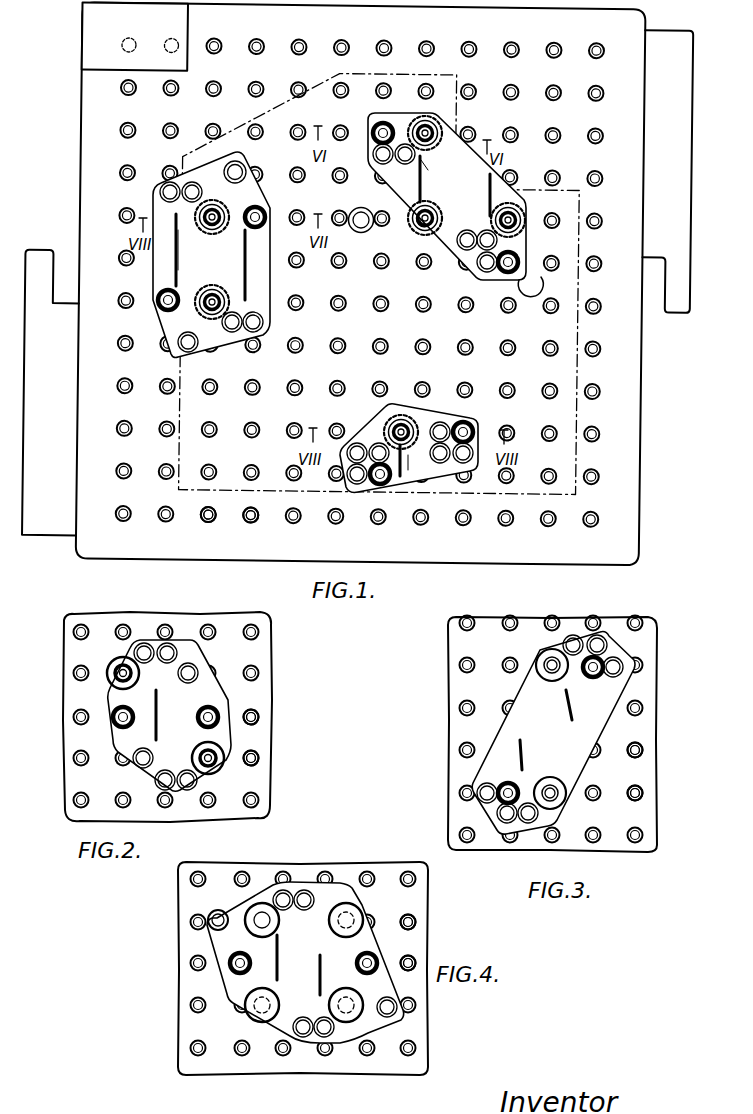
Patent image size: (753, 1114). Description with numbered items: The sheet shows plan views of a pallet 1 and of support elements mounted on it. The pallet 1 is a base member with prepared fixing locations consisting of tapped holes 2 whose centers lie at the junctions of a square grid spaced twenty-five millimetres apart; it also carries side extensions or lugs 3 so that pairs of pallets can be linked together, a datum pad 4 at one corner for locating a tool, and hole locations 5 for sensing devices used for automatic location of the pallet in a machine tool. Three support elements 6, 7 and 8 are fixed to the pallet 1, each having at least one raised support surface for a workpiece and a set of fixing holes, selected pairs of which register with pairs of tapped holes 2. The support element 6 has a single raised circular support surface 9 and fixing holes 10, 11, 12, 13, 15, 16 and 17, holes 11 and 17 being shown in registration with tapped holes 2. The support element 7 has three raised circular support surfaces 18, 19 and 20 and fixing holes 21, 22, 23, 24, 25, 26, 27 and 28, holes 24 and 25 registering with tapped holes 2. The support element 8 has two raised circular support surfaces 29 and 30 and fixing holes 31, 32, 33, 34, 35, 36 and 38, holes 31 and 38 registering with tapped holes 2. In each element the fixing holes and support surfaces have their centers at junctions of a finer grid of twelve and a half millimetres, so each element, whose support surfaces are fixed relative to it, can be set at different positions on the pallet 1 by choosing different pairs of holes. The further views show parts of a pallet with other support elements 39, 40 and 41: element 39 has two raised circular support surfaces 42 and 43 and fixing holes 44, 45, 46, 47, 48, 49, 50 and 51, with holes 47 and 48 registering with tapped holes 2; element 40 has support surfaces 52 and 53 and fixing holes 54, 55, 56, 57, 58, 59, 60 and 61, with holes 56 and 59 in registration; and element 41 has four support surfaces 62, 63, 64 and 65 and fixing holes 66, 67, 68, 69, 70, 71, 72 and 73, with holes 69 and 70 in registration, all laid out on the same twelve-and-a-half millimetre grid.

In FIG. 1, the pallet 1 is at (657, 258).
In FIG. 2, the pallet 1 is at (272, 692).
In FIG. 3, the pallet 1 is at (610, 840).
In FIG. 4, the pallet 1 is at (423, 945).
In FIG. 1, the tapped holes 2 is at (250, 521).
In FIG. 2, the tapped holes 2 is at (256, 721).
In FIG. 3, the tapped holes 2 is at (630, 757).
In FIG. 4, the tapped holes 2 is at (405, 929).
In FIG. 1, the side extensions or lugs 3 is at (44, 388).
In FIG. 1, the datum pad 4 is at (152, 31).
In FIG. 1, the hole locations 5 is at (360, 233).
In FIG. 1, the support element 6 is at (416, 413).
In FIG. 1, the support element 7 is at (420, 238).
In FIG. 1, the support element 8 is at (270, 282).
In FIG. 1, the raised circular support surface 9 is at (401, 415).
In FIG. 1, the fixing hole 10 is at (441, 421).
In FIG. 1, the fixing hole 11 is at (466, 421).
In FIG. 1, the fixing hole 12 is at (440, 464).
In FIG. 1, the fixing hole 13 is at (465, 461).
In FIG. 1, the fixing hole 15 is at (377, 443).
In FIG. 1, the fixing hole 16 is at (357, 485).
In FIG. 1, the fixing hole 17 is at (383, 485).
In FIG. 1, the raised circular support surface 18 is at (440, 212).
In FIG. 1, the raised circular support surface 19 is at (522, 214).
In FIG. 1, the raised circular support surface 20 is at (441, 128).
In FIG. 1, the fixing hole 21 is at (462, 250).
In FIG. 1, the fixing hole 22 is at (482, 236).
In FIG. 1, the fixing hole 23 is at (480, 270).
In FIG. 1, the fixing hole 24 is at (518, 256).
In FIG. 1, the fixing hole 25 is at (387, 125).
In FIG. 1, the fixing hole 26 is at (373, 153).
In FIG. 1, the fixing hole 27 is at (428, 170).
In FIG. 1, the fixing hole 28 is at (223, 207).
In FIG. 1, the raised circular support surface 29 is at (214, 289).
In FIG. 1, the raised circular support surface 30 is at (211, 232).
In FIG. 1, the fixing hole 31 is at (158, 296).
In FIG. 1, the fixing hole 32 is at (243, 166).
In FIG. 1, the fixing hole 33 is at (231, 334).
In FIG. 1, the fixing hole 34 is at (266, 322).
In FIG. 1, the fixing hole 35 is at (167, 183).
In FIG. 1, the fixing hole 36 is at (192, 182).
In FIG. 1, the fixing hole 38 is at (265, 212).
In FIG. 2, the support element 39 is at (218, 697).
In FIG. 3, the support element 40 is at (598, 728).
In FIG. 4, the support element 41 is at (370, 933).
In FIG. 2, the raised circular support surface 42 is at (201, 750).
In FIG. 2, the raised circular support surface 43 is at (109, 681).
In FIG. 2, the fixing hole 44 is at (144, 642).
In FIG. 2, the fixing hole 45 is at (167, 642).
In FIG. 2, the fixing hole 46 is at (196, 666).
In FIG. 2, the fixing hole 47 is at (199, 712).
In FIG. 2, the fixing hole 48 is at (126, 726).
In FIG. 2, the fixing hole 49 is at (153, 757).
In FIG. 2, the fixing hole 50 is at (155, 780).
In FIG. 2, the fixing hole 51 is at (187, 791).
In FIG. 3, the raised circular support surface 52 is at (550, 657).
In FIG. 3, the raised circular support surface 53 is at (551, 781).
In FIG. 3, the fixing hole 54 is at (573, 635).
In FIG. 3, the fixing hole 55 is at (601, 636).
In FIG. 3, the fixing hole 56 is at (592, 677).
In FIG. 3, the fixing hole 57 is at (619, 673).
In FIG. 3, the fixing hole 58 is at (480, 786).
In FIG. 3, the fixing hole 59 is at (507, 783).
In FIG. 3, the fixing hole 60 is at (503, 820).
In FIG. 3, the fixing hole 61 is at (527, 823).
In FIG. 4, the raised circular support surface 62 is at (274, 923).
In FIG. 4, the raised circular support surface 63 is at (348, 903).
In FIG. 4, the raised circular support surface 64 is at (249, 1012).
In FIG. 4, the raised circular support surface 65 is at (360, 1000).
In FIG. 4, the fixing hole 66 is at (217, 910).
In FIG. 4, the fixing hole 67 is at (281, 890).
In FIG. 4, the fixing hole 68 is at (304, 890).
In FIG. 4, the fixing hole 69 is at (231, 968).
In FIG. 4, the fixing hole 70 is at (358, 962).
In FIG. 4, the fixing hole 71 is at (300, 1031).
In FIG. 4, the fixing hole 72 is at (318, 1022).
In FIG. 4, the fixing hole 73 is at (388, 1018).